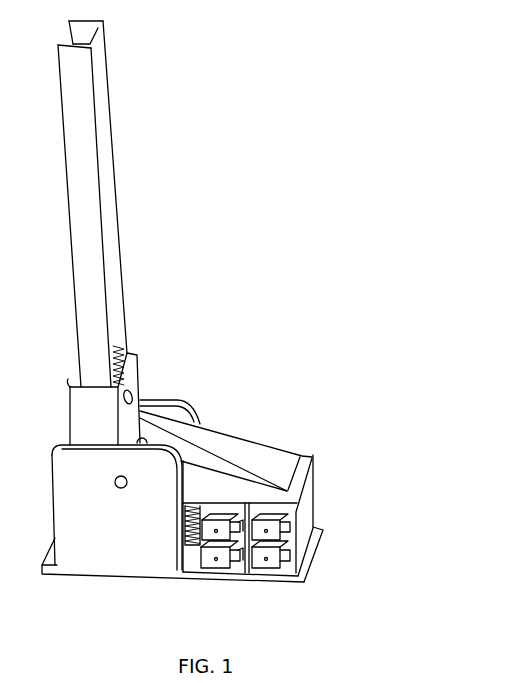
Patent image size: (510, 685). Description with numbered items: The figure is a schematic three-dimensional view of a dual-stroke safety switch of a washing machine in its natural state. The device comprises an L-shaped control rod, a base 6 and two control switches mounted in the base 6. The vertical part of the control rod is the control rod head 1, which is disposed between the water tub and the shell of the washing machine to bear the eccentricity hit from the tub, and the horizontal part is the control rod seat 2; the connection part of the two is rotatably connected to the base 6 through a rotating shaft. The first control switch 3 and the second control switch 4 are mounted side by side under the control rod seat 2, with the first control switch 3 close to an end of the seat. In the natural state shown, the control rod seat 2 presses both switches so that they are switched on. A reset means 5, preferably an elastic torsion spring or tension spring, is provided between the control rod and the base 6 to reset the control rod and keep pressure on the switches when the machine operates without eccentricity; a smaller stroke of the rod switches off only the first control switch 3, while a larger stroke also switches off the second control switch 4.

The control rod head 1 is at (102, 142).
The control rod seat 2 is at (237, 468).
The first control switch 3 is at (283, 558).
The second control switch 4 is at (235, 558).
The reset means 5 is at (203, 560).
The base 6 is at (123, 560).